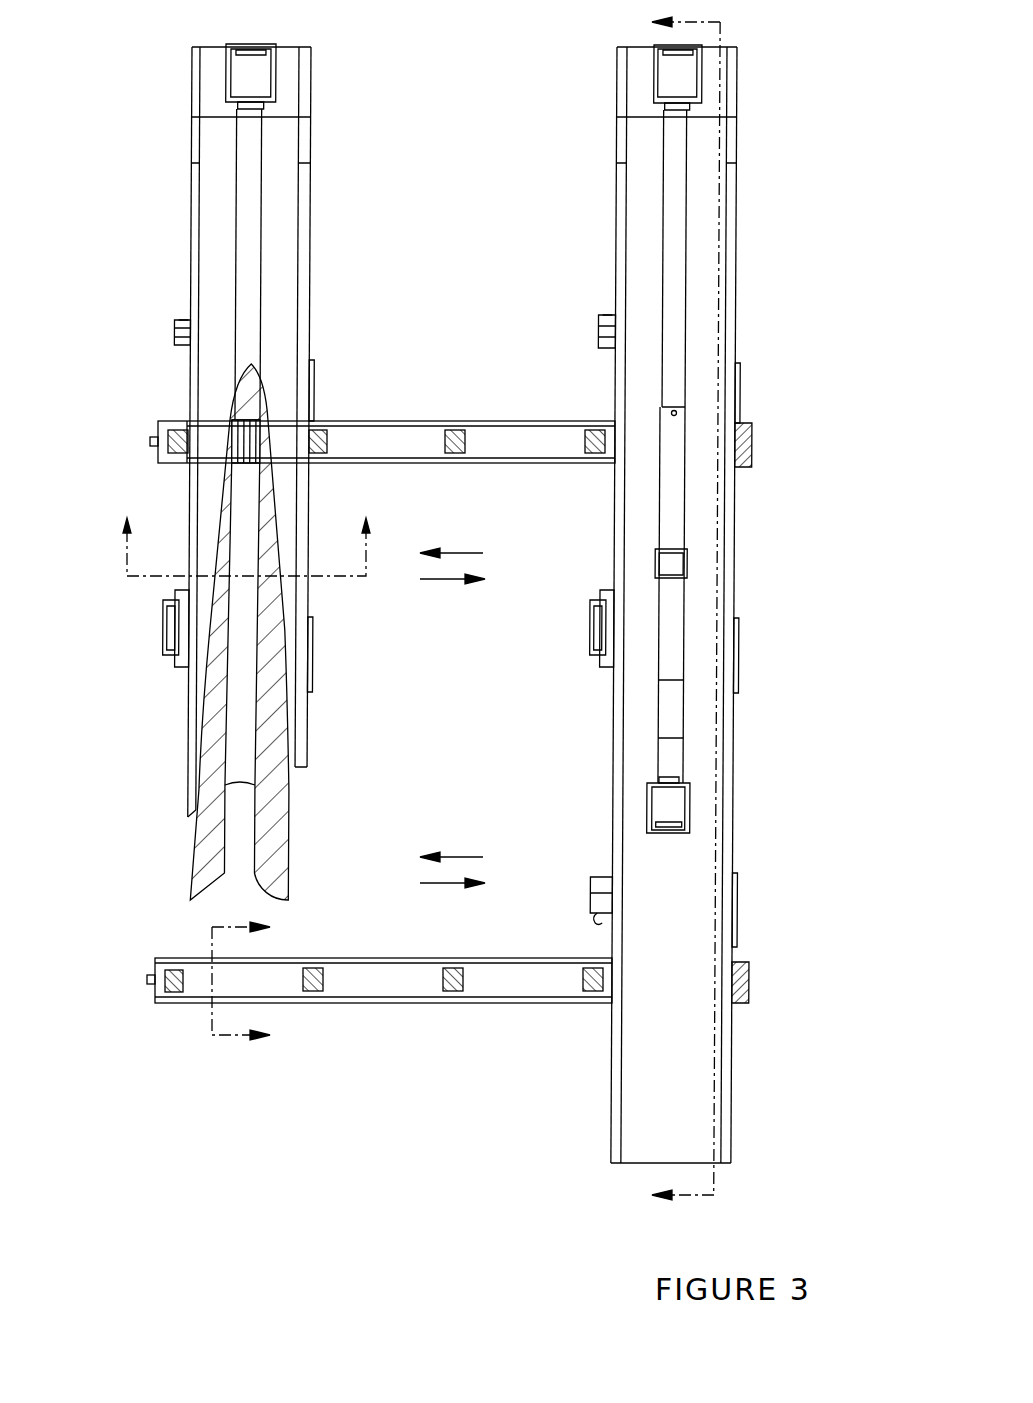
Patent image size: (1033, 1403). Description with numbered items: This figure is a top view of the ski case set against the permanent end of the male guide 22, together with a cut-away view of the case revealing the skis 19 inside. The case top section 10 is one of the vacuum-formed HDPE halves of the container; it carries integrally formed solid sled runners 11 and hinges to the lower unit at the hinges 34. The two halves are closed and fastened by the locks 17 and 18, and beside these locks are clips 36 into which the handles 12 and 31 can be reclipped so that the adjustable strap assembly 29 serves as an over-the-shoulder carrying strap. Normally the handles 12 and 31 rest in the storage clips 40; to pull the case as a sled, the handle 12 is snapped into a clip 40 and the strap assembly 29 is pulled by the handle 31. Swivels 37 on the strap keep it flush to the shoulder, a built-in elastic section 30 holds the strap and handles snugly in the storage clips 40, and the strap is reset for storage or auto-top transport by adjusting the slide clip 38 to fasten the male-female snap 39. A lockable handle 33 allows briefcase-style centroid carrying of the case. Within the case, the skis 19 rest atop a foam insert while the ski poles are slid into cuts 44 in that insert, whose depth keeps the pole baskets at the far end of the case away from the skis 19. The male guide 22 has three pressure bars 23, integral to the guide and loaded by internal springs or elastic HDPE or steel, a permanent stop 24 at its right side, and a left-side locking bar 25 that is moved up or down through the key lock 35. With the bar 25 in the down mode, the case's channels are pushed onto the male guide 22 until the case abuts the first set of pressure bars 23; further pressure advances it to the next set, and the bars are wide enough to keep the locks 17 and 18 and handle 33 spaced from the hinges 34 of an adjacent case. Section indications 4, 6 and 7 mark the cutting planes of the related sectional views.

The section line 4- 4 is at (257, 980).
The section line 6- 6 is at (249, 528).
The section line 7- 7 is at (672, 610).
The top section of the case 10 is at (295, 172).
The sled runners 11 is at (196, 172).
The handle 12 is at (276, 76).
The lock 17 is at (600, 893).
The lock 18 is at (178, 328).
The skis 19 is at (208, 829).
The male guide 22 is at (390, 443).
The pressure bars 23 is at (323, 421).
The permanent stop 24 is at (754, 443).
The locking position bar 25 is at (165, 443).
The strap assembly 29 is at (248, 130).
The elastic section 30 is at (672, 706).
The handle 31 is at (651, 806).
The lockable handle 33 is at (175, 628).
The hinges 34 is at (313, 360).
The key lock 35 is at (156, 437).
The clips 36 is at (185, 318).
The swivels 37 is at (258, 106).
The slide clip 38 is at (690, 563).
The male-female snap 39 is at (676, 410).
The storage clips 40 is at (685, 53).
The cuts 44 is at (234, 420).